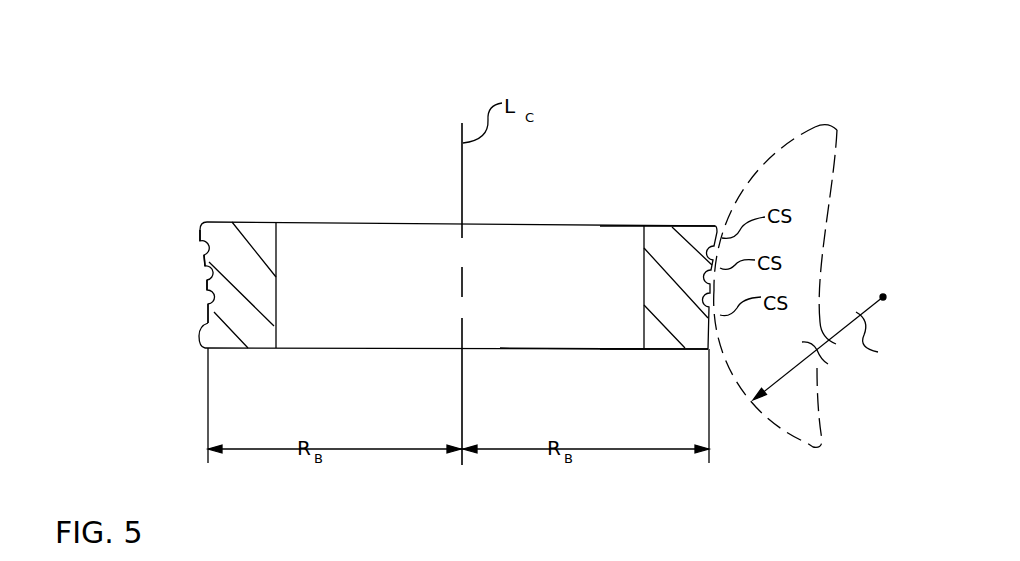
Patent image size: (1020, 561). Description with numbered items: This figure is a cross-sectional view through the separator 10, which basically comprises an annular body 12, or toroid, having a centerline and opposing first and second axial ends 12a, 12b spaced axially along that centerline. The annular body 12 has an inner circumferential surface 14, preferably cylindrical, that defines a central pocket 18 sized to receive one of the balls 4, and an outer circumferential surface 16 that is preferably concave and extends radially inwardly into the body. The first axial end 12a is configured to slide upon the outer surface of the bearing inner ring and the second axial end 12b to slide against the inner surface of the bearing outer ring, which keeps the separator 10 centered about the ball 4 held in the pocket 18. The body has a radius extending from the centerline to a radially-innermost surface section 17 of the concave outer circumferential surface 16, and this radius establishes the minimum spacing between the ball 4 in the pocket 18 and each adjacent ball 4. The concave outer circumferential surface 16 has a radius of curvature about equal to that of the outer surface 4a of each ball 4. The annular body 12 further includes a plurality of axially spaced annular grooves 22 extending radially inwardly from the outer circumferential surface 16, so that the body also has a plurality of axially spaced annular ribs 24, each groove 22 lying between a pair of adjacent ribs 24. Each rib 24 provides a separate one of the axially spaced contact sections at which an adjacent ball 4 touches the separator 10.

The separator 10 is at (264, 140).
The annular body 12 is at (569, 214).
The first axial end 12a is at (660, 350).
The second axial end 12b is at (672, 224).
The inner circumferential surface 14 is at (290, 256).
The outer circumferential surface 16 is at (188, 328).
The radially-innermost surface section 17 is at (206, 285).
The central pocket 18 is at (579, 352).
The annular grooves 22 is at (213, 273).
The annular ribs 24 is at (206, 259).
The ball 4 is at (783, 158).
The outer surface of ball 4a is at (760, 166).